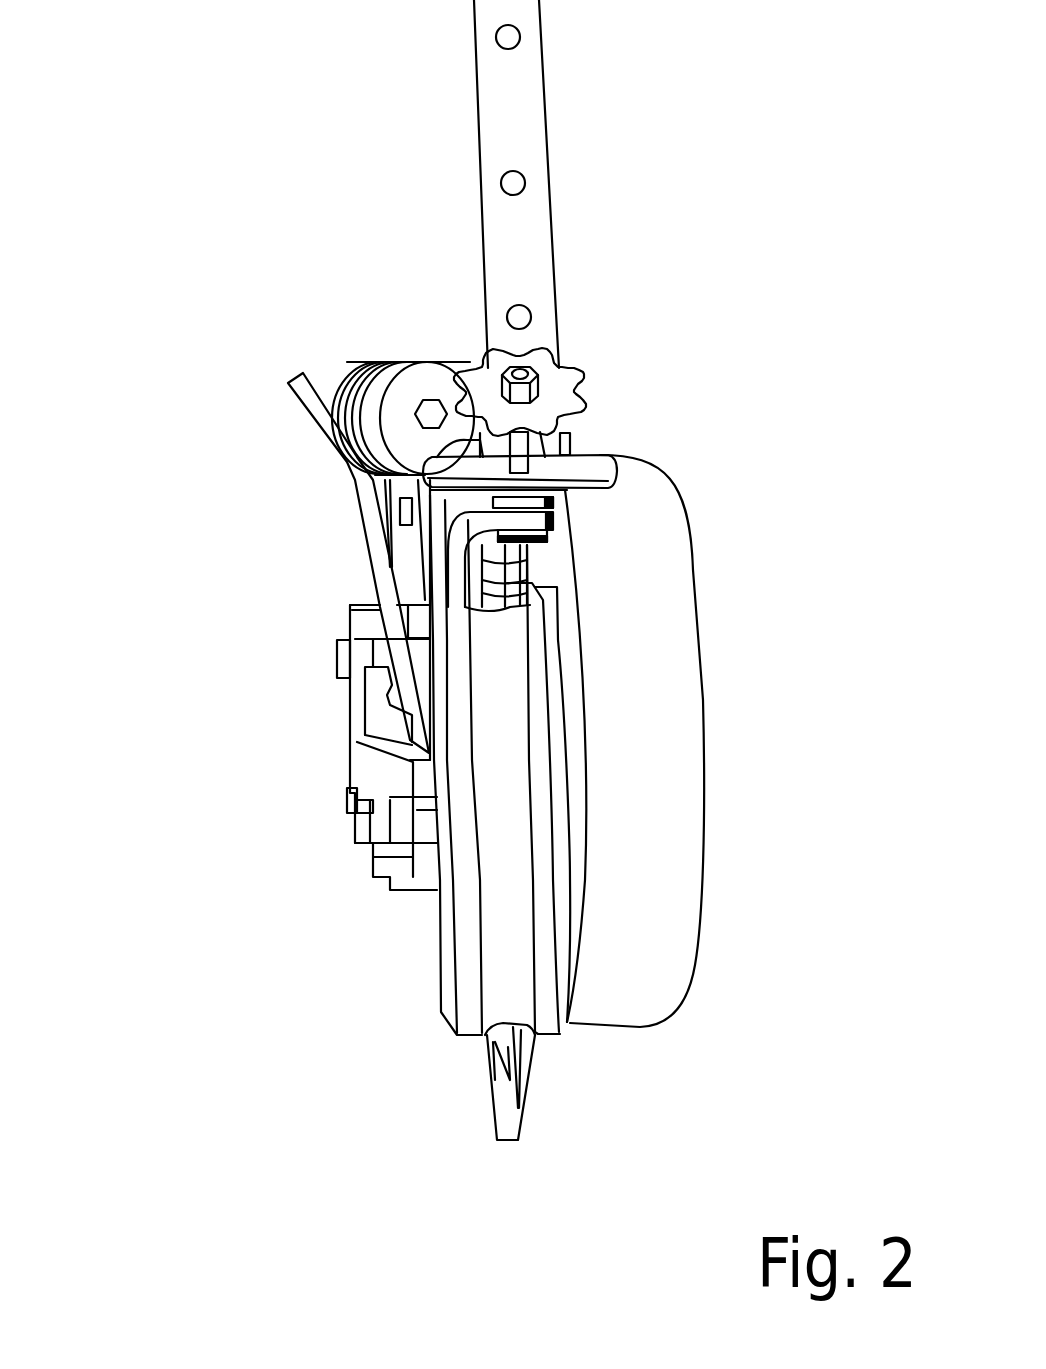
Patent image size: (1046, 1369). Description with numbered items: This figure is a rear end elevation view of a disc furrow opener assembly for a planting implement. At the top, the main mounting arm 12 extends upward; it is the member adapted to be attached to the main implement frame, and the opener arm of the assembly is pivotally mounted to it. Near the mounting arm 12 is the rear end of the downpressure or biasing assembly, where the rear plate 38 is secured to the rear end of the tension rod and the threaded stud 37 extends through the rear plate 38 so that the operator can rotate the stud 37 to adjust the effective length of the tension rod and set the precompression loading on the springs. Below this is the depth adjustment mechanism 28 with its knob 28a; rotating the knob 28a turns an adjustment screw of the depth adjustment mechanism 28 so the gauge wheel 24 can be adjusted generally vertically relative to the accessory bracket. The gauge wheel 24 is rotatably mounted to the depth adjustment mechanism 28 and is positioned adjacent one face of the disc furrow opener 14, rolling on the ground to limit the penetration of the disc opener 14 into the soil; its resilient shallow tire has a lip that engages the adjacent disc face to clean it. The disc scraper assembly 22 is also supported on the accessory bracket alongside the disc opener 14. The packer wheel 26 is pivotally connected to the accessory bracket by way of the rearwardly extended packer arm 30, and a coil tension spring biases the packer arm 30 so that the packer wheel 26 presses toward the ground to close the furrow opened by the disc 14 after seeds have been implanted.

The main mounting arm 12 is at (532, 212).
The disc furrow opener 14 is at (520, 1097).
The disc scraper assembly 22 is at (495, 930).
The gauge wheel 24 is at (660, 702).
The packer wheel 26 is at (486, 1057).
The depth adjustment mechanism 28 is at (525, 568).
The knob 28a is at (573, 377).
The packer arm 30 is at (372, 770).
The threaded stud 37 is at (432, 413).
The rear plate 38 is at (438, 372).